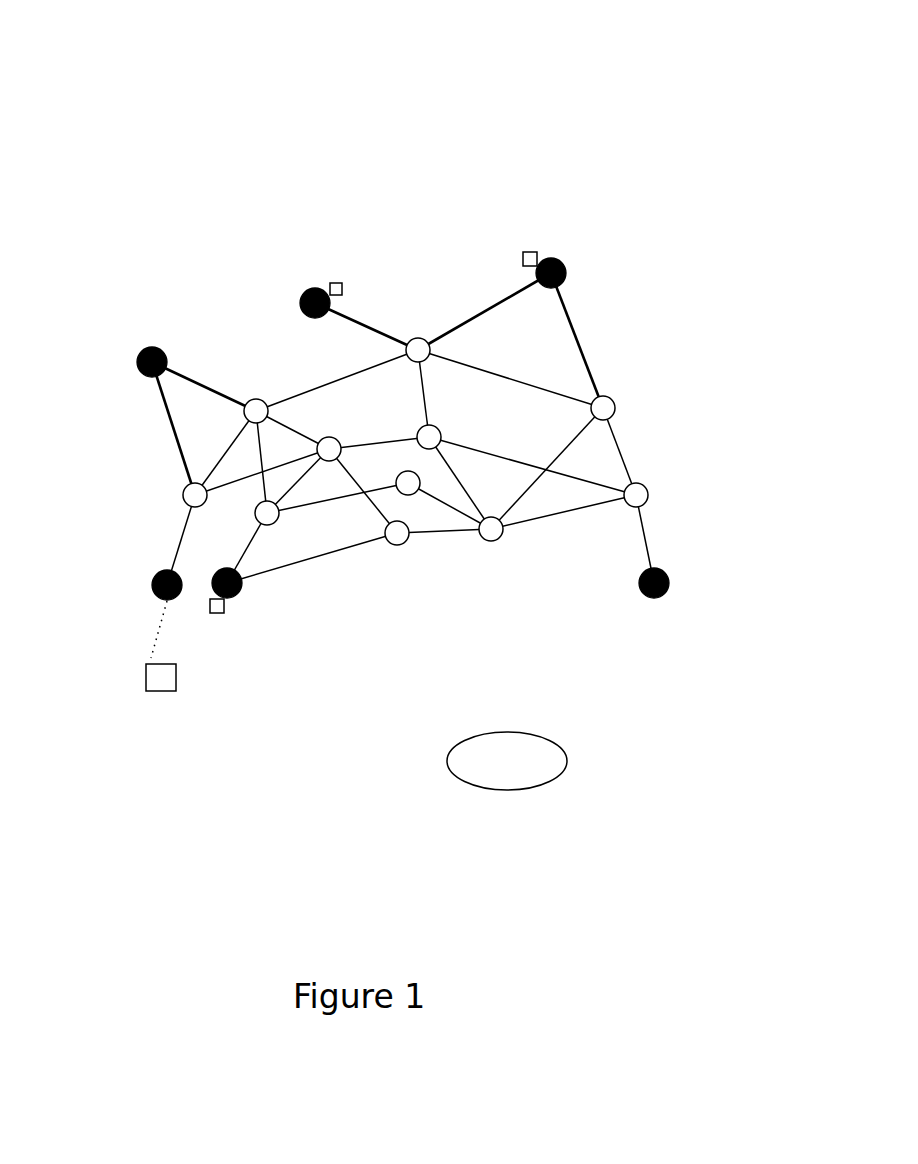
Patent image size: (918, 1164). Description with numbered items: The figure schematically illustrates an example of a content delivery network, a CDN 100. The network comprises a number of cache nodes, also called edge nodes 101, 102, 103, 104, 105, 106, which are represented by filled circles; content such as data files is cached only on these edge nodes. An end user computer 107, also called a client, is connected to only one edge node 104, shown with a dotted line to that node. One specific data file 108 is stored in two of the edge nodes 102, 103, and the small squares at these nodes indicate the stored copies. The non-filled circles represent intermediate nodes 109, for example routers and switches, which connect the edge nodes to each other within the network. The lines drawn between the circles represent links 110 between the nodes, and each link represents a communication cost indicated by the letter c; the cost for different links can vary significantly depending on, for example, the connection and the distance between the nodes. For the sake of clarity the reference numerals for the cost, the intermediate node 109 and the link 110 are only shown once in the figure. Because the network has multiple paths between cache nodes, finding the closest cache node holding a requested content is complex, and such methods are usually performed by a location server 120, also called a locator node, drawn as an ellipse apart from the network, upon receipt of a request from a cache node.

The CDN 100 is at (211, 142).
The edge node 101 is at (143, 352).
The edge node 102 is at (310, 290).
The edge node 103 is at (558, 258).
The edge node 104 is at (153, 590).
The edge node 105 is at (238, 595).
The edge node 106 is at (667, 597).
The end user computer 107 is at (175, 693).
The data file 108 is at (522, 253).
The intermediate node 109 is at (652, 487).
The link 110 is at (653, 548).
The location server 120 is at (563, 772).